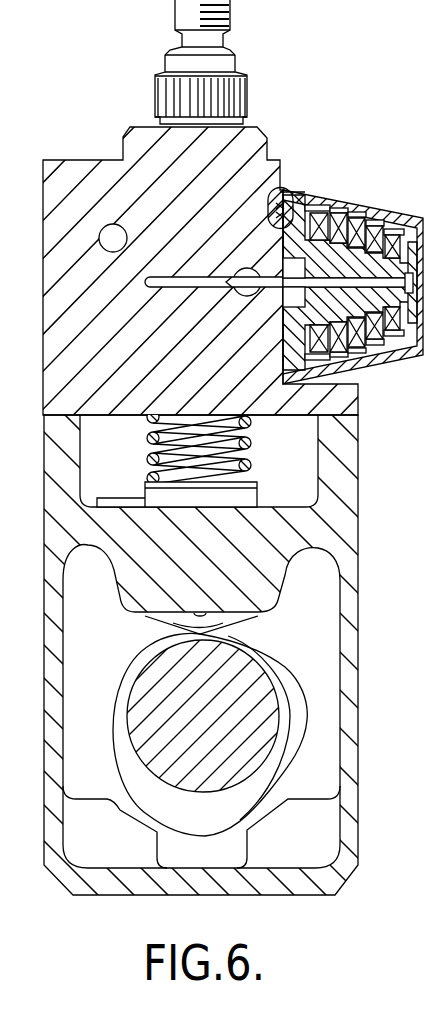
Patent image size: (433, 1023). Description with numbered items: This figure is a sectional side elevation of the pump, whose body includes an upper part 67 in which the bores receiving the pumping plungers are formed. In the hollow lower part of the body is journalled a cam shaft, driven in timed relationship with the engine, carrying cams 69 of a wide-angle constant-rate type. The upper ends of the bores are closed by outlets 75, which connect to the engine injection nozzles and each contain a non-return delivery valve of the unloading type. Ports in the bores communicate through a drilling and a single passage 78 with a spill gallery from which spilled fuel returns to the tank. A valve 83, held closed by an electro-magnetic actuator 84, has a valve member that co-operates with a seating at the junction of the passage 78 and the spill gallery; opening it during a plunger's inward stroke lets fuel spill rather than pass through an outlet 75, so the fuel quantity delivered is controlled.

The upper part 67 is at (73, 253).
The cams 69 is at (140, 778).
The outlets 75 is at (252, 98).
The single passage 78 is at (182, 282).
The valve 83 is at (283, 230).
The electro-magnetic actuator 84 is at (369, 194).